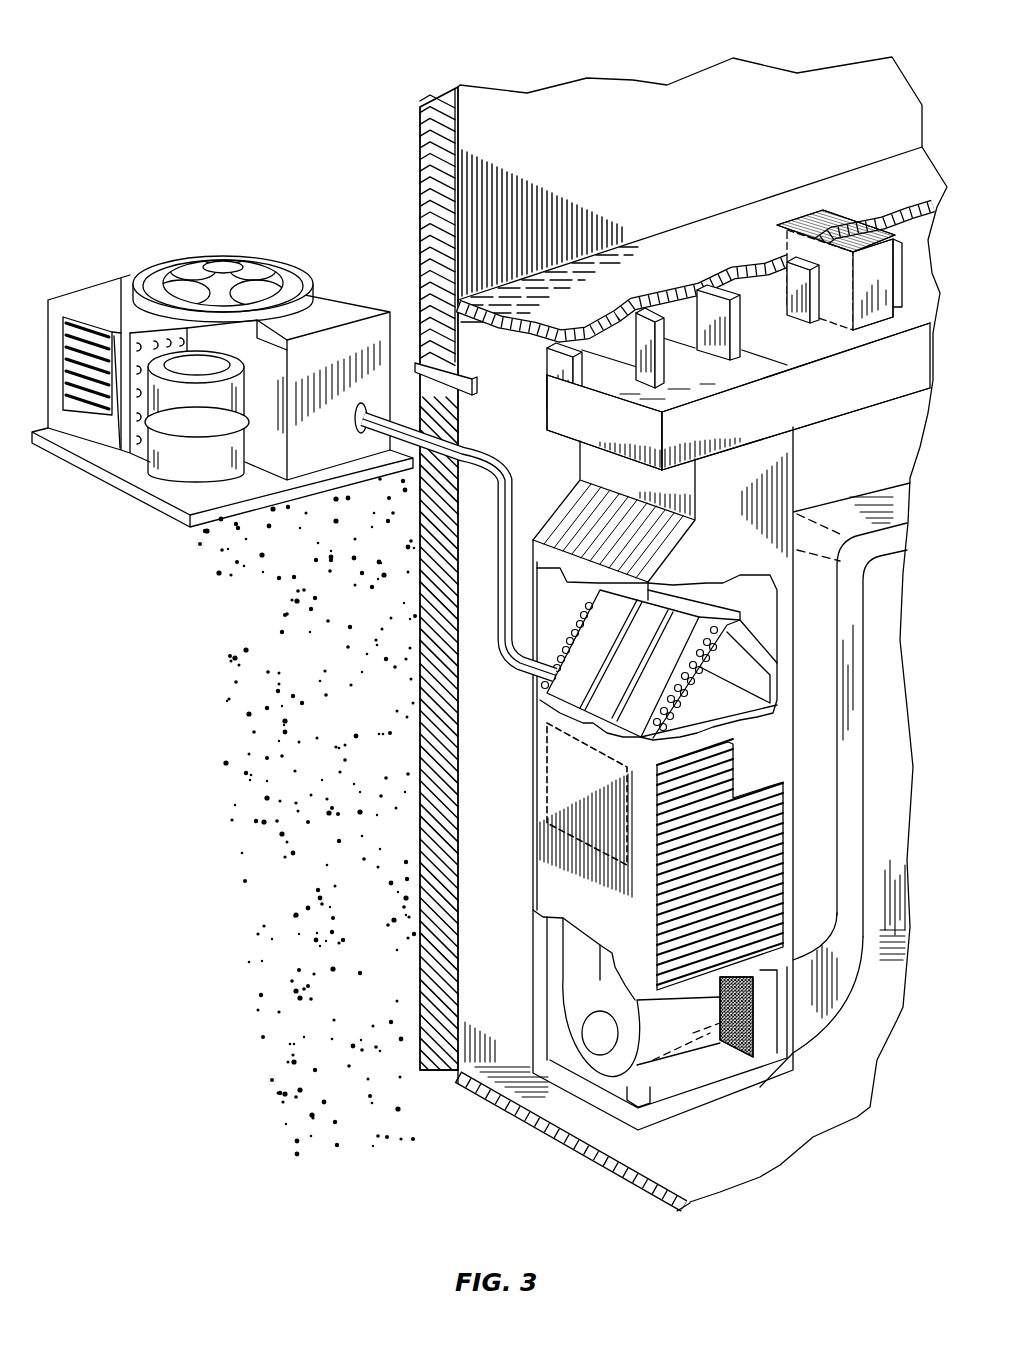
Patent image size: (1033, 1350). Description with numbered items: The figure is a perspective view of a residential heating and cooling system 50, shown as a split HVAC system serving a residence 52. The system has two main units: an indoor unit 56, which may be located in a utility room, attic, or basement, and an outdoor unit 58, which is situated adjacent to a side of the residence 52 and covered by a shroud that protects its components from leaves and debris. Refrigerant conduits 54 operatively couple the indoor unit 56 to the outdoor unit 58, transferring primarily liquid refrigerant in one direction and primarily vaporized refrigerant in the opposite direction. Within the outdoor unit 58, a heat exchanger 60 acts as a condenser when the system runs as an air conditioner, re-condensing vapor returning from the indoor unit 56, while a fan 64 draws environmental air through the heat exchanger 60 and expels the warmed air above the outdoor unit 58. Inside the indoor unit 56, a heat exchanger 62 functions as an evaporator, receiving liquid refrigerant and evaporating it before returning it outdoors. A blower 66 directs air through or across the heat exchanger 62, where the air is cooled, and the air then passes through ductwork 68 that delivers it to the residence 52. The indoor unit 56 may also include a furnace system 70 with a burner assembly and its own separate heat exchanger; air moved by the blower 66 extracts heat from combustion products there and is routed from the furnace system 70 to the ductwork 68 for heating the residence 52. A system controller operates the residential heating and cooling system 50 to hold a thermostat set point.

The residential heating and cooling system 50 is at (489, 609).
The residence 52 is at (580, 97).
The refrigerant conduits 54 is at (500, 529).
The indoor unit 56 is at (691, 778).
The outdoor unit 58 is at (222, 373).
The heat exchanger 60 is at (140, 345).
The heat exchanger 62 is at (607, 693).
The fan 64 is at (246, 268).
The blower 66 is at (587, 1056).
The ductwork 68 is at (873, 267).
The furnace system 70 is at (543, 762).